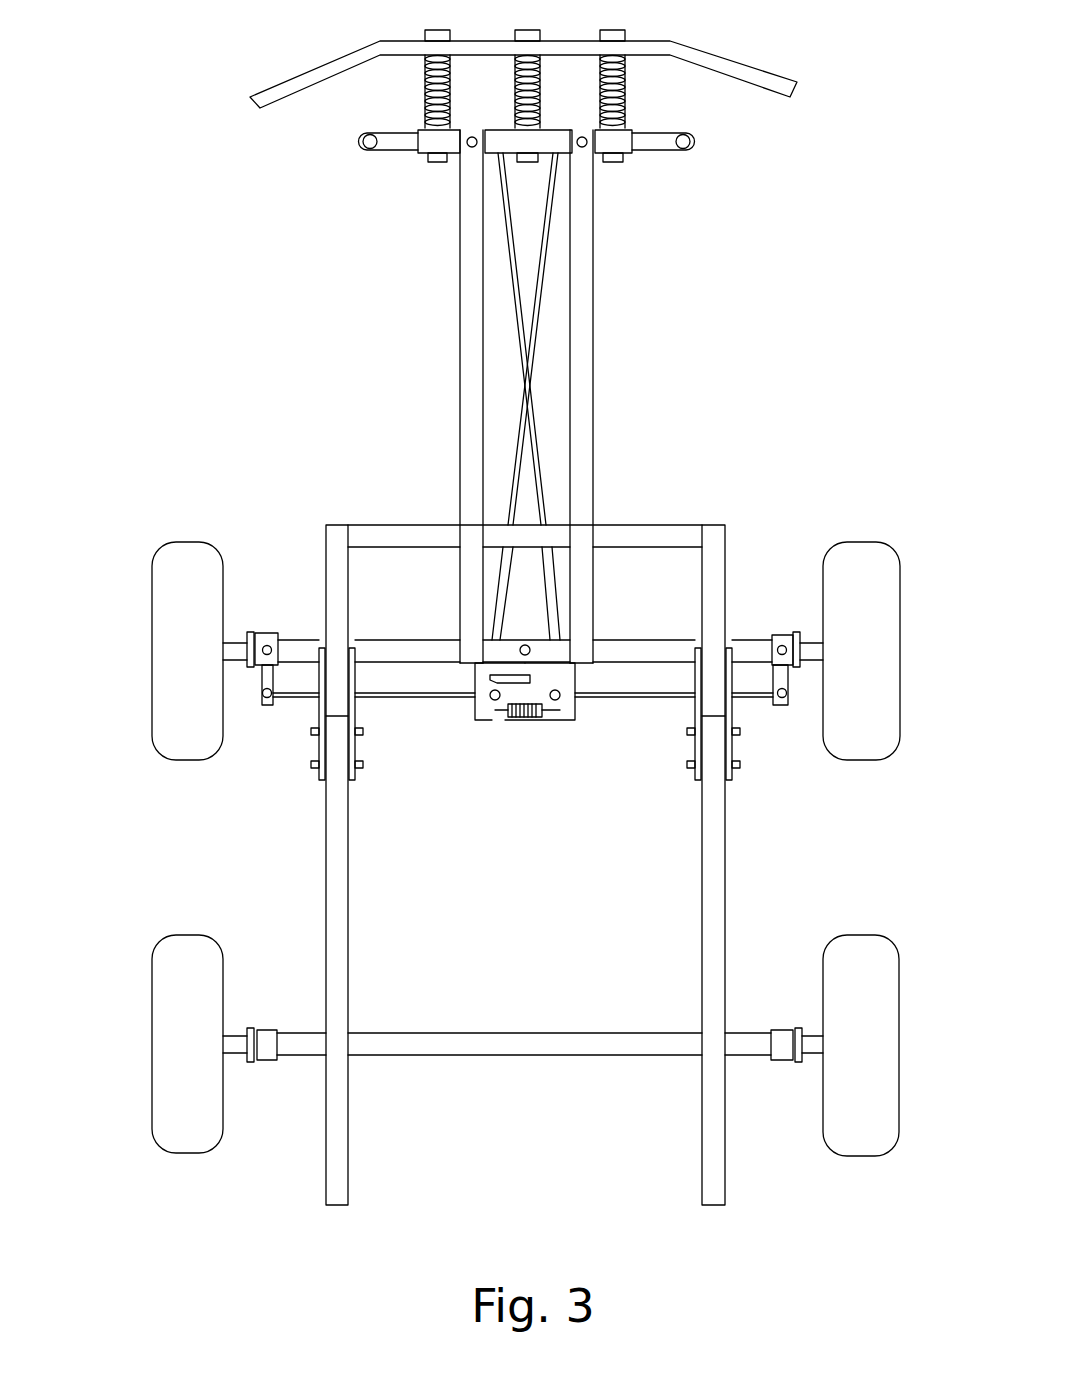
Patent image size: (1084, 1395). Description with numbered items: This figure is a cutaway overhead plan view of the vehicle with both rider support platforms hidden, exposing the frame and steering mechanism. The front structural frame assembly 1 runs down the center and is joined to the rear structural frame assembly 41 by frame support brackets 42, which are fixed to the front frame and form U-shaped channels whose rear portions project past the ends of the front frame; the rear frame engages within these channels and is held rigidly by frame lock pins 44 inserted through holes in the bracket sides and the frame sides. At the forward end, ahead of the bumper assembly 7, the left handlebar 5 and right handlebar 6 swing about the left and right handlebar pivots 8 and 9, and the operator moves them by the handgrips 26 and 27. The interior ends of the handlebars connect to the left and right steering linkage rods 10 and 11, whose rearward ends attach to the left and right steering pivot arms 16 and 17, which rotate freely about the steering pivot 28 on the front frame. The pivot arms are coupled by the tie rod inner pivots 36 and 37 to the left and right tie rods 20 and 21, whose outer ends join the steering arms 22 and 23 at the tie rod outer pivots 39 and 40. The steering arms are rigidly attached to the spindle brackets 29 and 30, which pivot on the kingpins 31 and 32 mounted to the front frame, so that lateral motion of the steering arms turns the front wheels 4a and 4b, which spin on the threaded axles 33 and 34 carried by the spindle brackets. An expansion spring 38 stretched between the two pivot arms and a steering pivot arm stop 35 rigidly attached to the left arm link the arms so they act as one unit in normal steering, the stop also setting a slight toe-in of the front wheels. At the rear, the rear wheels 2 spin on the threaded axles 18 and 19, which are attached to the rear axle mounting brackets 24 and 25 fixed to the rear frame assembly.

The front structural frame assembly 1 is at (470, 398).
The rear wheels 2 is at (175, 977).
The left front wheel 4a is at (172, 582).
The right front wheel 4b is at (862, 575).
The left handlebar 5 is at (400, 145).
The right handlebar 6 is at (655, 142).
The bumper assembly 7 is at (275, 88).
The left handlebar pivot 8 is at (467, 146).
The right handlebar pivot 9 is at (590, 148).
The left steering linkage rod 10 is at (505, 253).
The right steering linkage rod 11 is at (545, 264).
The left steering pivot arm 16 is at (485, 688).
The right steering pivot arm 17 is at (568, 690).
The threaded axle 18 is at (233, 1046).
The threaded axle 19 is at (818, 1046).
The left tie rod 20 is at (433, 700).
The right tie rod 21 is at (626, 700).
The left steering arm 22 is at (263, 706).
The right steering arm 23 is at (790, 706).
The rear axle mounting bracket 24 is at (268, 1040).
The rear axle mounting bracket 25 is at (781, 1040).
The left handgrip 26 is at (358, 140).
The right handgrip 27 is at (705, 140).
The steering pivot 28 is at (524, 645).
The left spindle bracket 29 is at (262, 633).
The right spindle bracket 30 is at (782, 635).
The left kingpin 31 is at (270, 647).
The right kingpin 32 is at (779, 647).
The threaded axle 33 is at (242, 647).
The threaded axle 34 is at (806, 647).
The steering pivot arm stop 35 is at (518, 686).
The tie rod inner pivot 36 is at (491, 699).
The tie rod inner pivot 37 is at (558, 700).
The expansion spring 38 is at (533, 720).
The tie rod outer pivot 39 is at (268, 700).
The tie rod outer pivot 40 is at (781, 700).
The rear structural frame assembly 41 is at (712, 945).
The frame support brackets 42 is at (352, 780).
The frame lock pins 44 is at (690, 732).